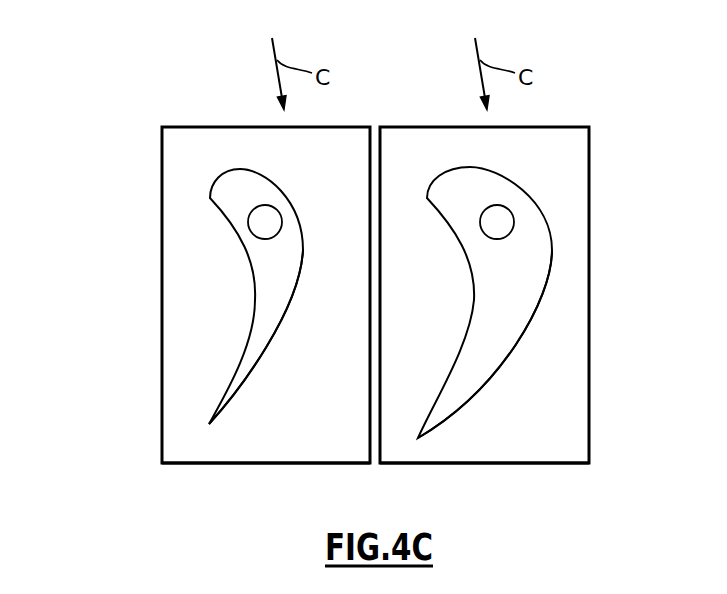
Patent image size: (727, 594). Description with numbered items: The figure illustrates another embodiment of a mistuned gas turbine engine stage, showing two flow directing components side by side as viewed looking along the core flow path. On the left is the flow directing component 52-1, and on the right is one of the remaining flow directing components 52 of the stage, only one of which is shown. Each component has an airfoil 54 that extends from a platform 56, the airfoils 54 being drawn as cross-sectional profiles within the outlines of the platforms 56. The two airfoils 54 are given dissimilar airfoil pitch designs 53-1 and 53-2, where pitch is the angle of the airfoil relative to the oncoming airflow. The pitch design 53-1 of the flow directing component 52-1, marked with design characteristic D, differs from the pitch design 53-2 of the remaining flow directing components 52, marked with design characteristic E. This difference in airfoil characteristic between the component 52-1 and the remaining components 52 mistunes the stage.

The flow directing component 52-1 is at (146, 247).
The flow directing component 52 is at (606, 248).
The airfoil pitch design 53-1 is at (246, 172).
The airfoil pitch design 53-2 is at (450, 176).
The airfoil 54 is at (291, 331).
The platform 56 is at (302, 455).